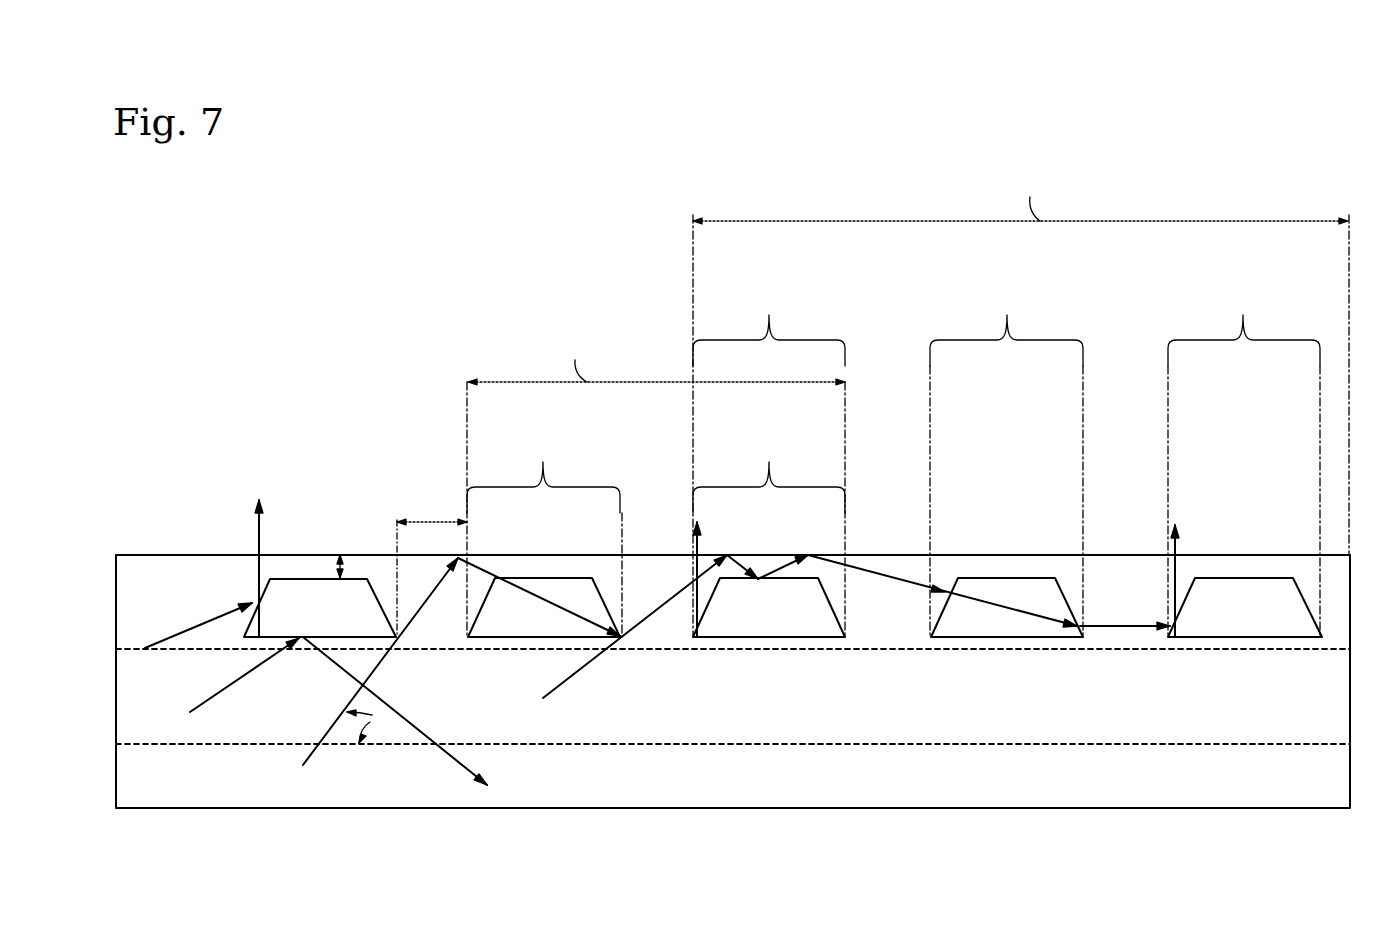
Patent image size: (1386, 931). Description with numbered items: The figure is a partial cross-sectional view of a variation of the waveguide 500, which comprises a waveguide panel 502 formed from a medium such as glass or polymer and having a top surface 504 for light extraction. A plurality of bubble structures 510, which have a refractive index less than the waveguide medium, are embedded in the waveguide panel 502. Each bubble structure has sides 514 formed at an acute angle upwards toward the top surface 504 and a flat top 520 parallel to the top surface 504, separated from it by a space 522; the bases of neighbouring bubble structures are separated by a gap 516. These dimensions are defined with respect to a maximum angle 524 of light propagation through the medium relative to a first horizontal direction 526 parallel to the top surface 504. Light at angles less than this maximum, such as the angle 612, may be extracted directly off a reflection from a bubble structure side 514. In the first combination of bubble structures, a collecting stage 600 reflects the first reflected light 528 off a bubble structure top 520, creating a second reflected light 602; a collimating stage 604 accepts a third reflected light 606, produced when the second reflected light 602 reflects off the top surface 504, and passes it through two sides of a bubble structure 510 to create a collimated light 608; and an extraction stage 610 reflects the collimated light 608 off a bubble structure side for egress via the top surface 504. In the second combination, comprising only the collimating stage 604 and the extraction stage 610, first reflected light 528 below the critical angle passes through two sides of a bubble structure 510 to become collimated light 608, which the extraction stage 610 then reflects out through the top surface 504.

The waveguide 500 is at (1222, 130).
The waveguide panel 502 is at (1275, 794).
The top surface 504 is at (160, 553).
The bubble structures 510 is at (1222, 619).
The sides 514 is at (247, 620).
The gap (W) 516 is at (437, 519).
The top 520 is at (757, 583).
The space (h) 522 is at (340, 566).
The maximum angle (α) 524 is at (338, 671).
The first horizontal direction 526 is at (1263, 744).
The first reflected light 528 is at (480, 587).
The collecting stage 600 is at (908, 395).
The second reflected light 602 is at (777, 570).
The collimating stage 604 is at (775, 441).
The third reflected light 606 is at (875, 573).
The collimated light 608 is at (1115, 622).
The extraction stage 610 is at (1006, 441).
The angle (β) 612 is at (217, 621).